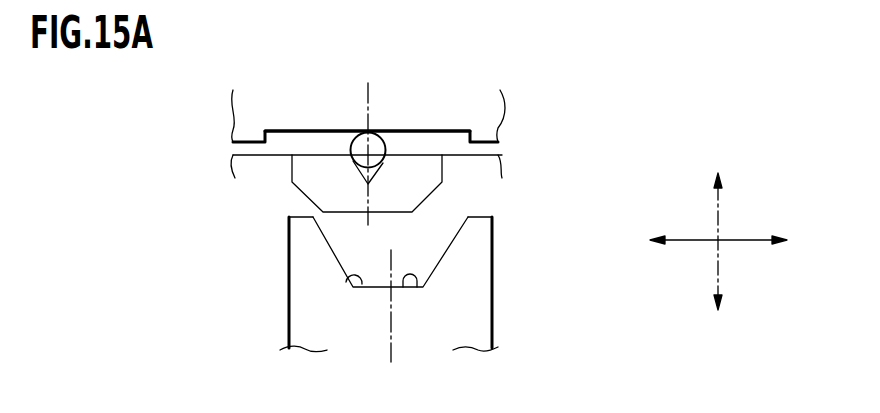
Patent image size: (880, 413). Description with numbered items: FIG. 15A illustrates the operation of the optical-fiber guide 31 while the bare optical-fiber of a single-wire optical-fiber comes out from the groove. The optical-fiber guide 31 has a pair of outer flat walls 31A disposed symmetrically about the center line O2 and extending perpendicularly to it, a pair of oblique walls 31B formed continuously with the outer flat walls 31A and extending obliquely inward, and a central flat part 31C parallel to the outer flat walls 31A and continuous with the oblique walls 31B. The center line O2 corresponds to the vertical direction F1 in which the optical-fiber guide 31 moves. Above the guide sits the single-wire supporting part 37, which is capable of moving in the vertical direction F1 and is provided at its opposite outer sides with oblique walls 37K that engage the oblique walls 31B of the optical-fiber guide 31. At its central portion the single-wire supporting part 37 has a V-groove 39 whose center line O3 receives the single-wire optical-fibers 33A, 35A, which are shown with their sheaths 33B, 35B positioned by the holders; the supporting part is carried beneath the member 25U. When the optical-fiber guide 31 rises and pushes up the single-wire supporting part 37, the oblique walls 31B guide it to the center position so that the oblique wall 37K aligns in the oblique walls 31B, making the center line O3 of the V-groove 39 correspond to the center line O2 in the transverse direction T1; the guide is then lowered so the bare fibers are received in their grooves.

The upper member 25U is at (482, 108).
The single-wire optical-fiber 33A is at (367, 65).
The single-wire optical-fiber 35A is at (333, 129).
The sheath 33B is at (424, 107).
The sheath 35B is at (377, 142).
The V-groove 39 is at (366, 181).
The center line of the V-groove O3 is at (368, 114).
The single-wire supporting part 37 is at (359, 233).
The oblique wall 37K is at (303, 193).
The optical-fiber guide 31 is at (390, 295).
The outer flat wall 31A is at (302, 214).
The oblique wall 31B is at (350, 282).
The central flat part 31C is at (417, 288).
The center line O2 is at (391, 326).
The vertical direction F1 is at (718, 225).
The transverse direction T1 is at (733, 240).